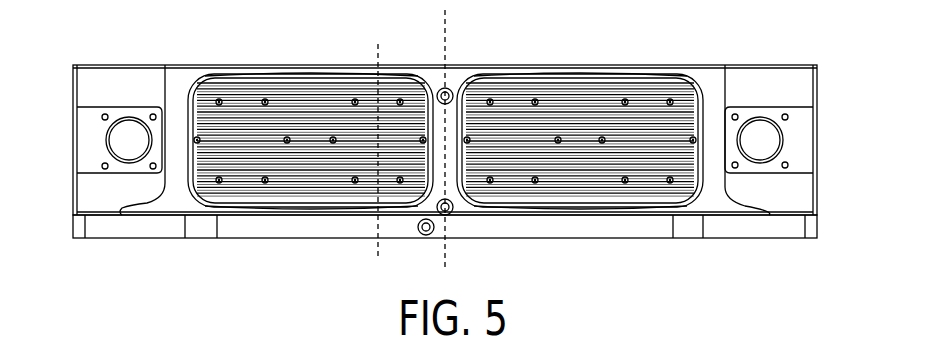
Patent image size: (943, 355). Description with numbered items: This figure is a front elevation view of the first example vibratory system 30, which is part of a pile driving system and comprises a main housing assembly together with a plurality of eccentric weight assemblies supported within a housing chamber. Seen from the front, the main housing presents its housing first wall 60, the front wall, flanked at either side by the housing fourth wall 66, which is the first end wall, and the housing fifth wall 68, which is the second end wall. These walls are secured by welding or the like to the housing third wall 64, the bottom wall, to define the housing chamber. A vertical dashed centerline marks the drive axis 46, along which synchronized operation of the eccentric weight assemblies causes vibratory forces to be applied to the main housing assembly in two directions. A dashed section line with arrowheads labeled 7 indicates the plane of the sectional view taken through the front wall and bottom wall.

The vibratory system 30 is at (809, 58).
The drive axis 46 is at (448, 39).
The housing first wall 60 is at (178, 72).
The housing third wall 64 is at (583, 232).
The housing fourth wall 66 is at (73, 108).
The housing fifth wall 68 is at (818, 92).
The section line 7- 7 is at (378, 44).